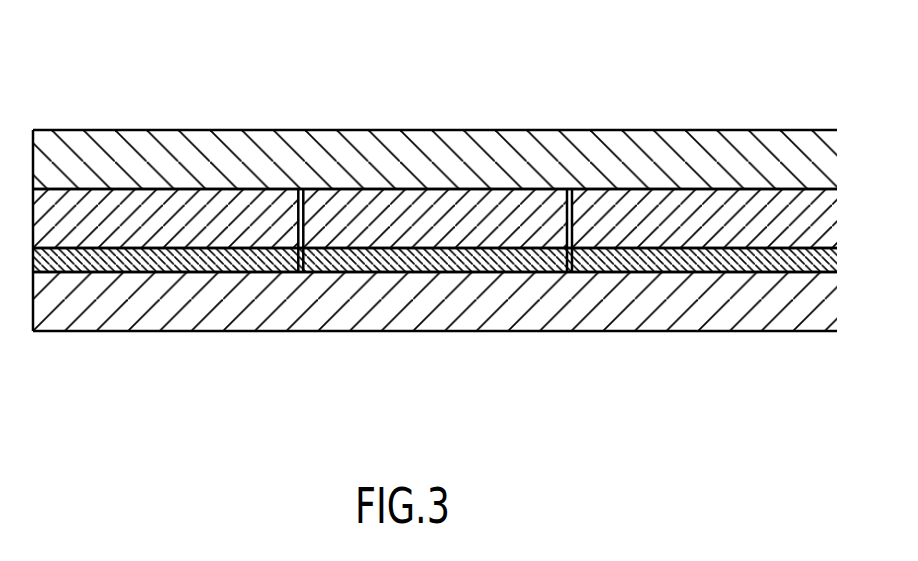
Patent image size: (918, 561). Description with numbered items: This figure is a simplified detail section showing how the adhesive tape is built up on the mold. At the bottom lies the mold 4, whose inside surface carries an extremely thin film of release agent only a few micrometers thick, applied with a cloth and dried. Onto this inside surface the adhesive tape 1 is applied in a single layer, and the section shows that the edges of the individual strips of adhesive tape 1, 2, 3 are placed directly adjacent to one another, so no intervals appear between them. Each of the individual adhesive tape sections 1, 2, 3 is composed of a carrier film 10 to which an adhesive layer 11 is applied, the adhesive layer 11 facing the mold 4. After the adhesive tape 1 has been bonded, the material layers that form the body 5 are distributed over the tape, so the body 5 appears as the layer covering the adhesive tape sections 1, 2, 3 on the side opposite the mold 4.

The adhesive tape 1 is at (220, 215).
The adhesive tape strip 2 is at (473, 212).
The adhesive tape strip 3 is at (710, 215).
The mold 4 is at (672, 308).
The body 5 is at (558, 147).
The carrier film 10 is at (192, 218).
The adhesive layer 11 is at (92, 255).